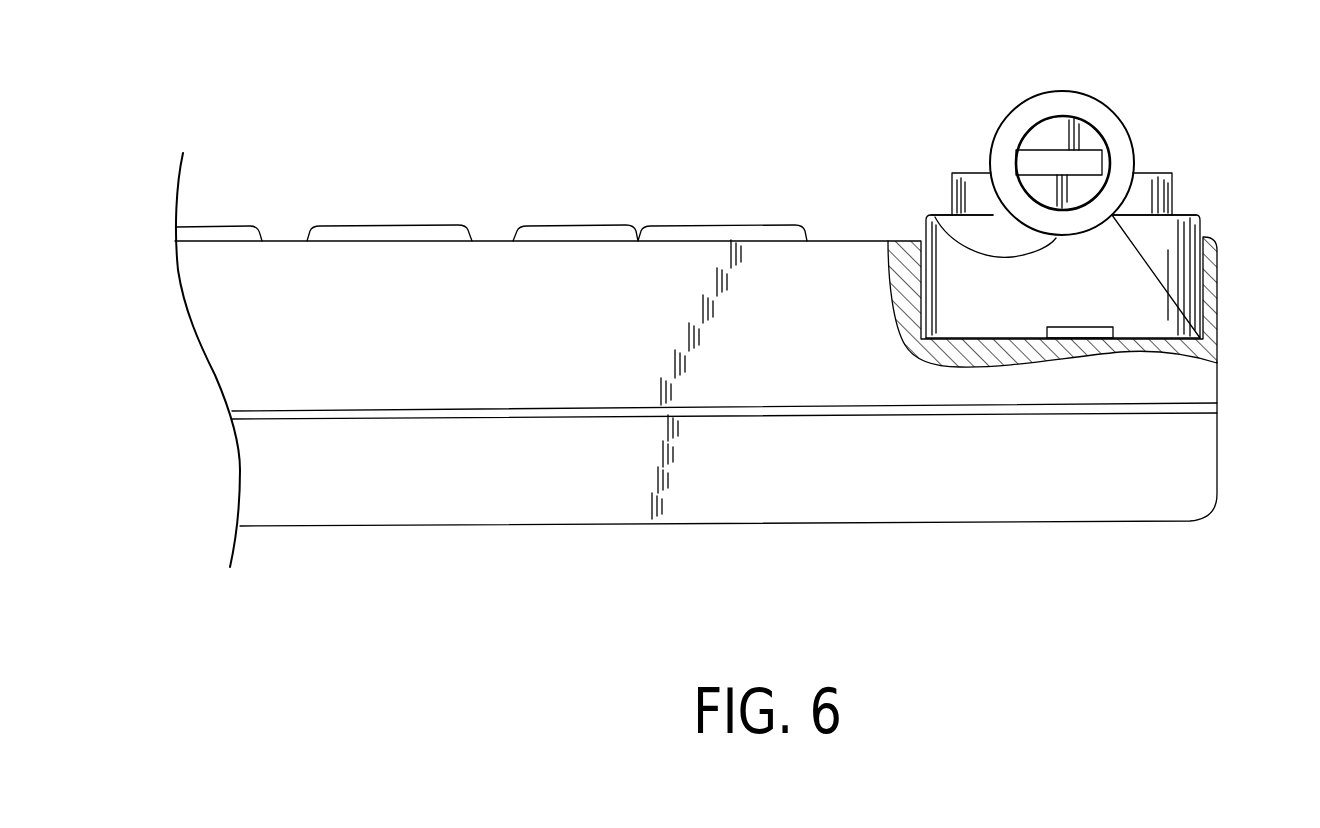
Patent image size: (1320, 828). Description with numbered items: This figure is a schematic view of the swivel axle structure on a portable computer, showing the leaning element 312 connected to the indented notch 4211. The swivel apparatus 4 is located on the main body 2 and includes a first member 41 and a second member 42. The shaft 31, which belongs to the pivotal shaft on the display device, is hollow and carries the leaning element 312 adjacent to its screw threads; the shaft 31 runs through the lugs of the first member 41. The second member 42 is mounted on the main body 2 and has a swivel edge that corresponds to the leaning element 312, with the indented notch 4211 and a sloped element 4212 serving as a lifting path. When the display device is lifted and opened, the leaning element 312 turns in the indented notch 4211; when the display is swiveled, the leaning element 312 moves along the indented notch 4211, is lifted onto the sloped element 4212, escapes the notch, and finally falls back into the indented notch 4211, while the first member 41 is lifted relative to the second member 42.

The main body 2 is at (864, 478).
The swivel apparatus 4 is at (1071, 221).
The first member 41 is at (1152, 183).
The second member 42 is at (1157, 272).
The indented notch 4211 is at (1185, 213).
The sloped element 4212 is at (970, 243).
The shaft 31 is at (1086, 141).
The leaning element 312 is at (1104, 112).